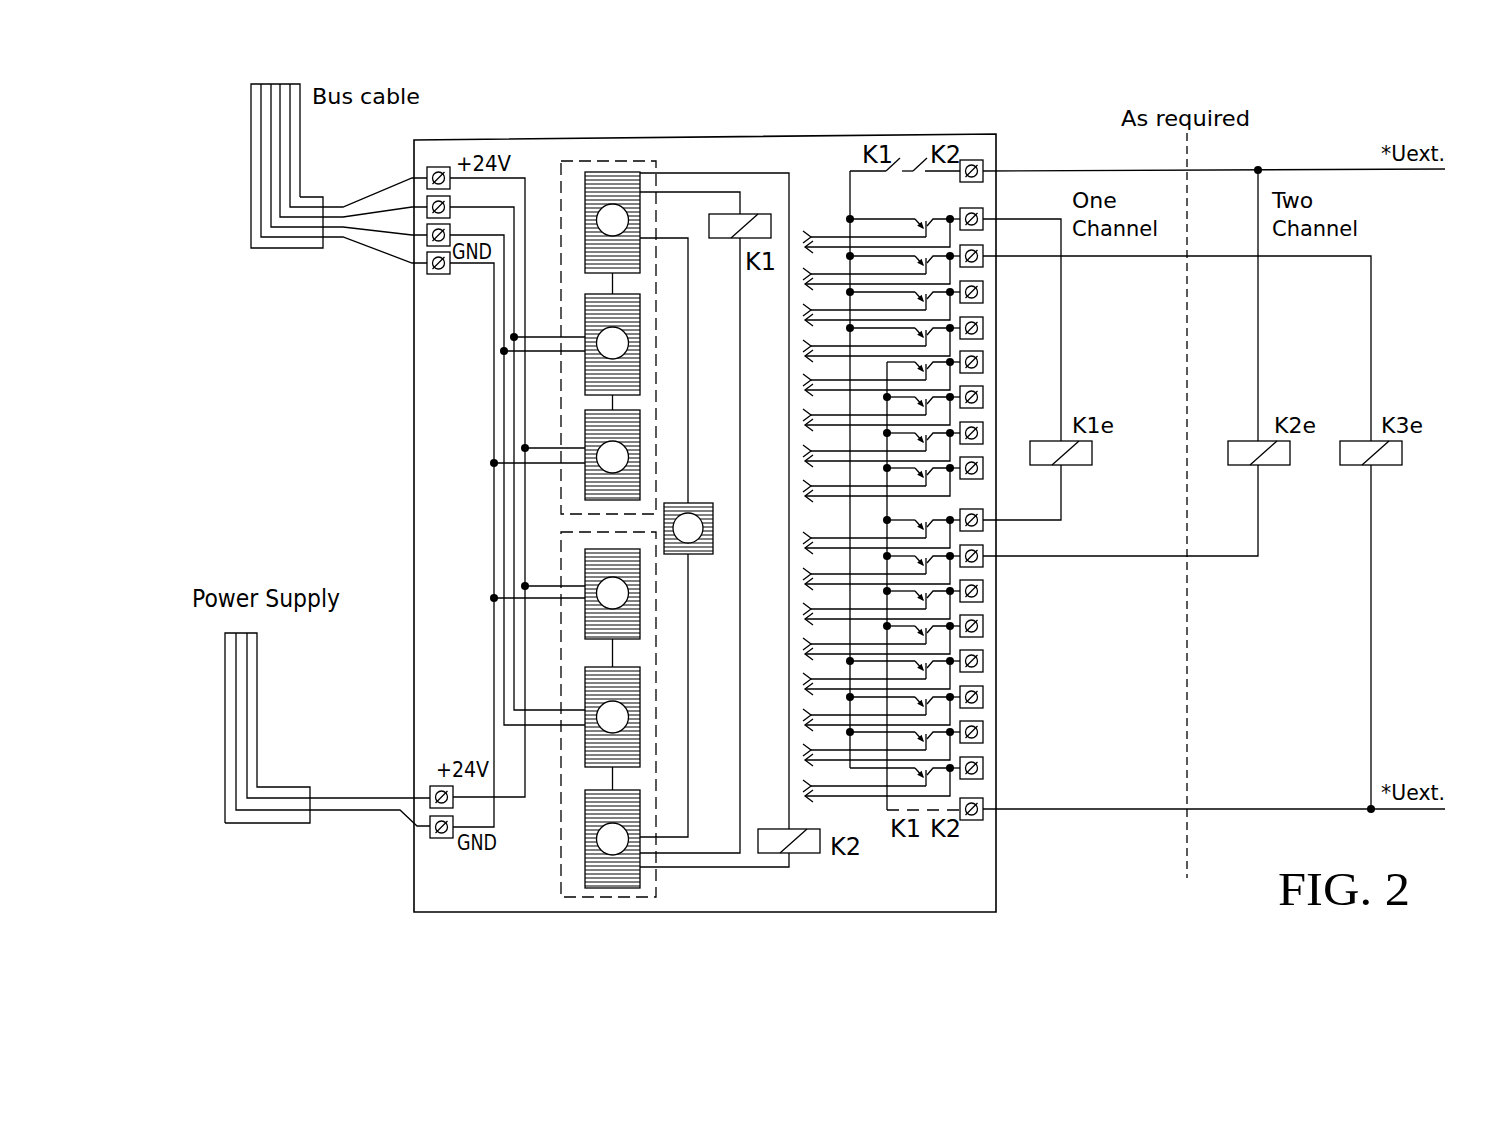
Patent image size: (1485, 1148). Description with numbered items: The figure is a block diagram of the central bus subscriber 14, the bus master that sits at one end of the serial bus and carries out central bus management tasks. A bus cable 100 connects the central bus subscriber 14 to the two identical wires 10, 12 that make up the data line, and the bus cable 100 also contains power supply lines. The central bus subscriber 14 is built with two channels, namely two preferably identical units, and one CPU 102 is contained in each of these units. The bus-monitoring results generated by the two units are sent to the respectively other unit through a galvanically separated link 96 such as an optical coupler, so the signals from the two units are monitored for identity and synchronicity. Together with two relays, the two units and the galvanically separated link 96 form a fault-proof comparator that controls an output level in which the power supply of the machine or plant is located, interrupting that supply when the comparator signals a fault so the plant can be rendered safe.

The wire 10 is at (383, 212).
The wire 12 is at (383, 233).
The central bus subscriber 14 is at (414, 433).
The galvanically separated link 96 is at (707, 503).
The bus cable 100 is at (285, 249).
The CPU 102 is at (575, 170).